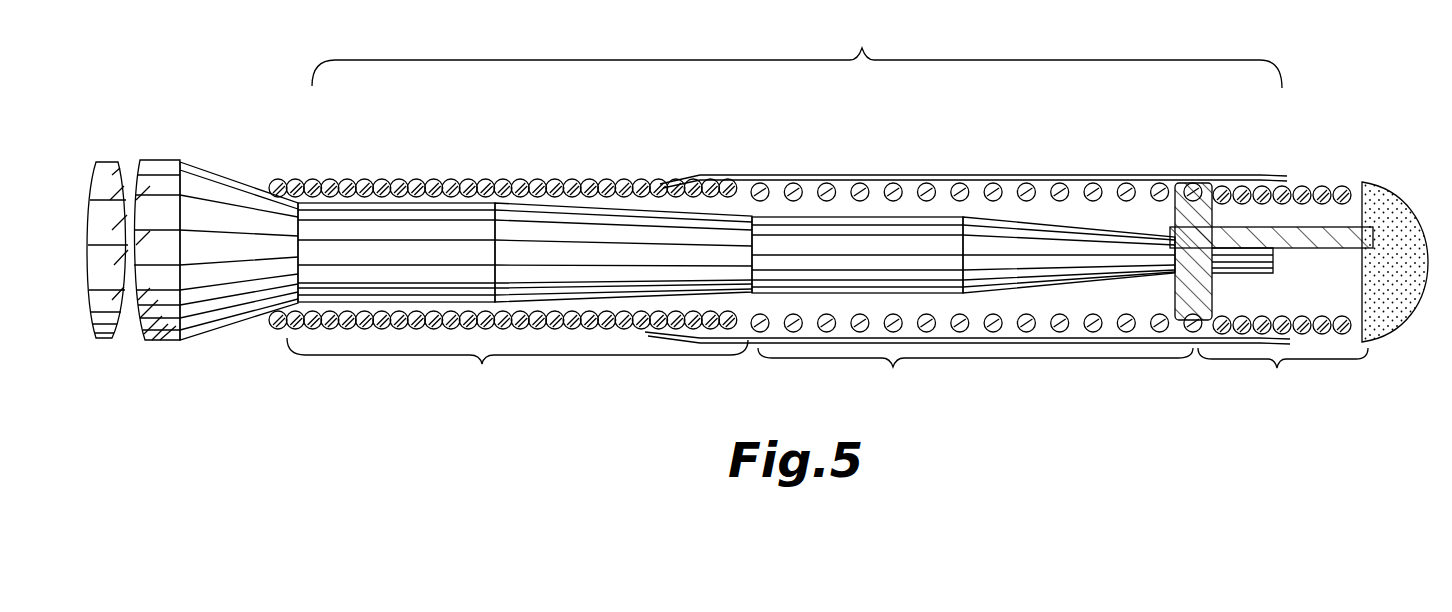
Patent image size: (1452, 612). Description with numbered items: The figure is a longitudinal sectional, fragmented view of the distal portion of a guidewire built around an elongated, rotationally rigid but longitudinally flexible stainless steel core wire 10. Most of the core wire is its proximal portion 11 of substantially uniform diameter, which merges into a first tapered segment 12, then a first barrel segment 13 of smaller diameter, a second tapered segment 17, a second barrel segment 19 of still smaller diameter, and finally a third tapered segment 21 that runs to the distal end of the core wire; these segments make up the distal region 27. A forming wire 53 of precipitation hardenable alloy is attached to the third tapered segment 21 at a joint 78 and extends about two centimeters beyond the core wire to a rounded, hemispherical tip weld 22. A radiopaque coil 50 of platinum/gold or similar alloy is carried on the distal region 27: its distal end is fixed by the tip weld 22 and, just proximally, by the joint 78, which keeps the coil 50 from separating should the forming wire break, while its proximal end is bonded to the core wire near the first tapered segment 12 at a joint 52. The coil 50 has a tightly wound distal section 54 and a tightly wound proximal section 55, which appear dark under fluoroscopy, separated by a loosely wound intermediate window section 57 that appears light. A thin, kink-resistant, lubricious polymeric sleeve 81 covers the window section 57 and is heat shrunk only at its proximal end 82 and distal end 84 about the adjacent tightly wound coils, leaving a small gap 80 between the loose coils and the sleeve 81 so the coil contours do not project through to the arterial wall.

The core wire 10 is at (176, 180).
The proximal portion 11 is at (162, 164).
The first tapered segment 12 is at (226, 190).
The first barrel segment 13 is at (458, 225).
The second tapered segment 17 is at (578, 228).
The second barrel segment 19 is at (800, 228).
The third tapered segment 21 is at (1025, 235).
The rounded tip weld 22 is at (1392, 193).
The distal region 27 is at (797, 52).
The radiopaque coil 50 is at (595, 330).
The joint 52 is at (277, 183).
The forming wire 53 is at (1298, 237).
The distal tightly wound coil section 54 is at (1283, 376).
The proximal tightly wound coil section 55 is at (517, 369).
The intermediate window coil section 57 is at (975, 376).
The joint 78 is at (1185, 325).
The gap 80 is at (746, 190).
The polymeric sleeve 81 is at (906, 172).
The proximal end of sleeve 82 is at (668, 183).
The distal end of sleeve 84 is at (1262, 180).